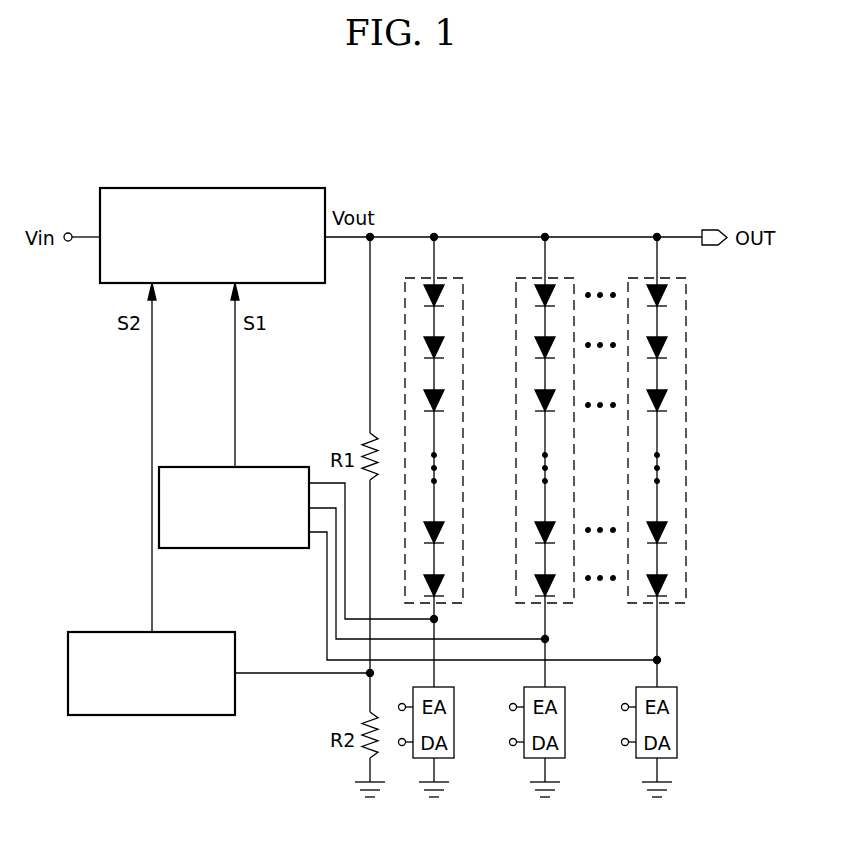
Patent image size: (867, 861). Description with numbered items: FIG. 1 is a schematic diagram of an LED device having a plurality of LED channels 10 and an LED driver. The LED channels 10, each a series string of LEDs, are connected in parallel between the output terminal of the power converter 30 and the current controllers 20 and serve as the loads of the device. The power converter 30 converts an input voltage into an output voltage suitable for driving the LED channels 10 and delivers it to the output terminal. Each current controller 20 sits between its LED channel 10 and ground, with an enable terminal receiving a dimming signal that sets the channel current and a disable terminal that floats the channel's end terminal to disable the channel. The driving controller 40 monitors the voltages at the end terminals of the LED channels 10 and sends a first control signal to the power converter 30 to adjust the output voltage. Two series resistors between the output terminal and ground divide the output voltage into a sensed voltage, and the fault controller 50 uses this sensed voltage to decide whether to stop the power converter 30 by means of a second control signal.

The LED channel 10 is at (463, 288).
The current controller 20 is at (455, 722).
The power converter 30 is at (281, 188).
The driving controller 40 is at (264, 467).
The fault controller 50 is at (182, 632).